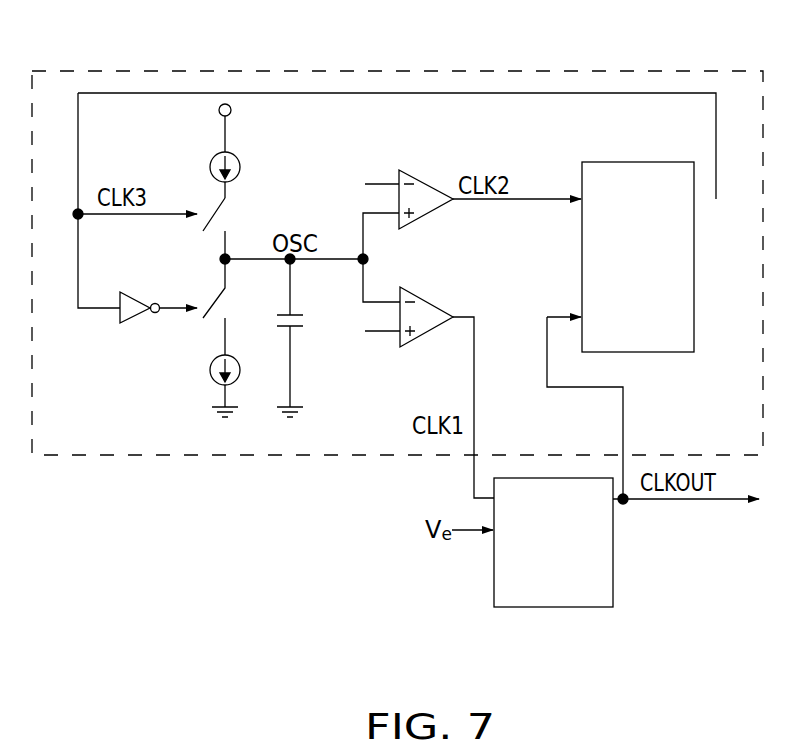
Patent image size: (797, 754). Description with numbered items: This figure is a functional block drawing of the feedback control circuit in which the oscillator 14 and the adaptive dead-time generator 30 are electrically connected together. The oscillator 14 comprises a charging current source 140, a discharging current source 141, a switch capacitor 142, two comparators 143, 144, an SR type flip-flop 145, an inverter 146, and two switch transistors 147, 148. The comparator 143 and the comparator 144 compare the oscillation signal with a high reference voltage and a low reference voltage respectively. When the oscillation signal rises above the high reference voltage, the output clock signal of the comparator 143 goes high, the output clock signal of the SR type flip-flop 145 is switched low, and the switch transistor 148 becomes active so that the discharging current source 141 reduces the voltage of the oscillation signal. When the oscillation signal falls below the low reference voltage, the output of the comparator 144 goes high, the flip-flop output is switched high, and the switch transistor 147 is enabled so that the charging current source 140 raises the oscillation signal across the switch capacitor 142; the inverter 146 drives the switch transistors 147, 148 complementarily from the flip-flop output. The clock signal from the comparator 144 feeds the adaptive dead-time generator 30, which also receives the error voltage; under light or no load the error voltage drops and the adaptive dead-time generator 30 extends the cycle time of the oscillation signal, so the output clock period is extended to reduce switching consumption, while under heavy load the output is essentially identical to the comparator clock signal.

The oscillator 14 is at (407, 72).
The charging current source 140 is at (232, 152).
The discharging current source 141 is at (212, 383).
The switch capacitor 142 is at (305, 330).
The comparator 143 is at (430, 180).
The comparator 144 is at (430, 296).
The SR type flip-flop 145 is at (644, 162).
The inverter 146 is at (130, 323).
The switch transistor 147 is at (226, 226).
The switch transistor 148 is at (226, 312).
The adaptive dead-time generator 30 is at (613, 572).